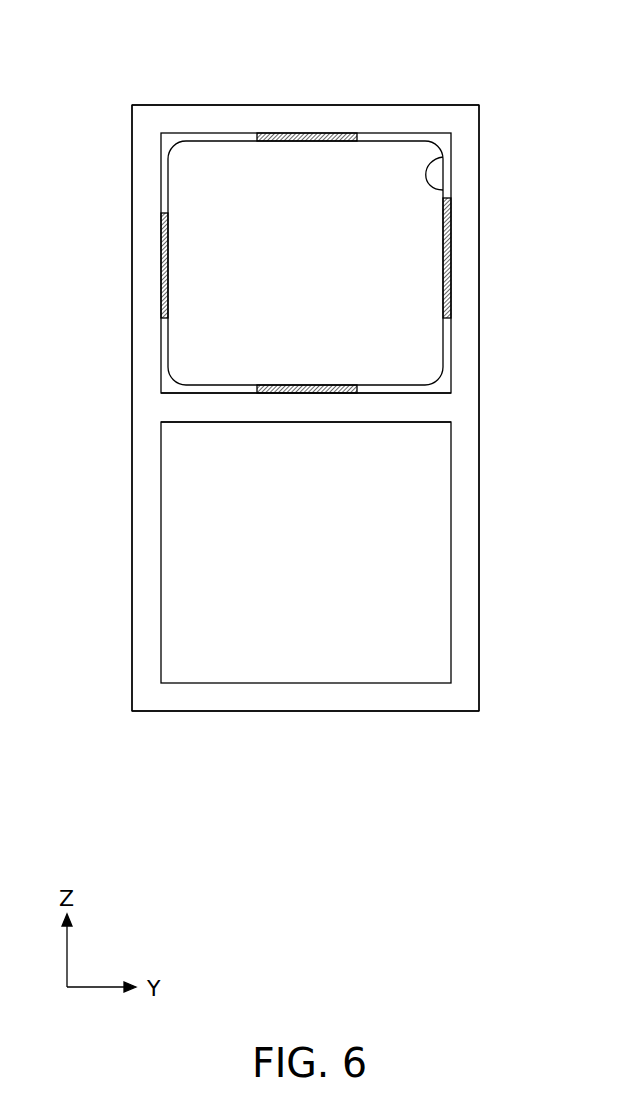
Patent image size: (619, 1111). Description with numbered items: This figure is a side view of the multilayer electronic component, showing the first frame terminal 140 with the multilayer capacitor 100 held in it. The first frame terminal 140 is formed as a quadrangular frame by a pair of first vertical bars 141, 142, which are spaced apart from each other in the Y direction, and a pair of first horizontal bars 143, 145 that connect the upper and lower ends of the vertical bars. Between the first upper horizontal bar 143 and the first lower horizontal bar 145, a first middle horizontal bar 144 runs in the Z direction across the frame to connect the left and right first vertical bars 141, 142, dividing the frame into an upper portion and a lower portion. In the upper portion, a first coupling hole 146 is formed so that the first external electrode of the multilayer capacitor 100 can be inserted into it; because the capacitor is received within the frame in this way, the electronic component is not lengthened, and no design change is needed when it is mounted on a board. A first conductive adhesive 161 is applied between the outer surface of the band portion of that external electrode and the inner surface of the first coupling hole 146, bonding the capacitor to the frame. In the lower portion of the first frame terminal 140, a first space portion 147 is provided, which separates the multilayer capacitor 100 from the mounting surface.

The multilayer capacitor 100 is at (192, 194).
The first frame terminal 140 is at (148, 98).
The first vertical bar 141 is at (143, 531).
The first vertical bar 142 is at (473, 572).
The first upper horizontal bar 143 is at (304, 113).
The first middle horizontal bar 144 is at (253, 408).
The first lower horizontal bar 145 is at (283, 697).
The first coupling hole 146 is at (443, 157).
The first space portion 147 is at (256, 590).
The first conductive adhesive 161 is at (447, 250).